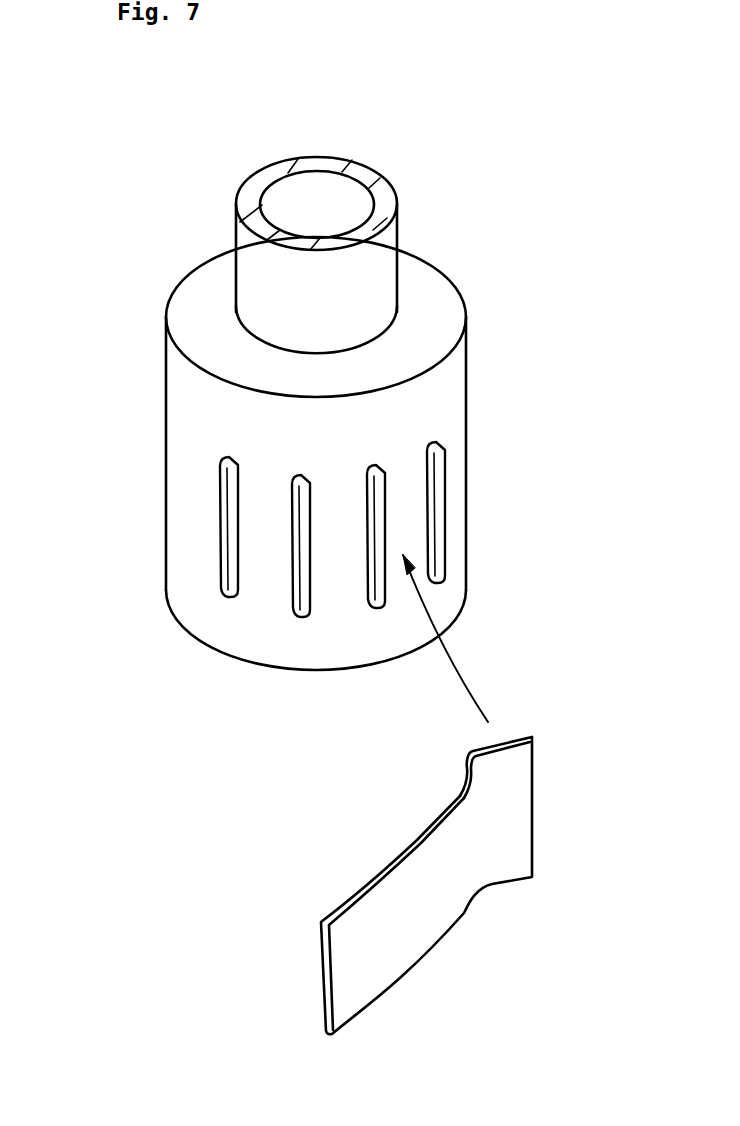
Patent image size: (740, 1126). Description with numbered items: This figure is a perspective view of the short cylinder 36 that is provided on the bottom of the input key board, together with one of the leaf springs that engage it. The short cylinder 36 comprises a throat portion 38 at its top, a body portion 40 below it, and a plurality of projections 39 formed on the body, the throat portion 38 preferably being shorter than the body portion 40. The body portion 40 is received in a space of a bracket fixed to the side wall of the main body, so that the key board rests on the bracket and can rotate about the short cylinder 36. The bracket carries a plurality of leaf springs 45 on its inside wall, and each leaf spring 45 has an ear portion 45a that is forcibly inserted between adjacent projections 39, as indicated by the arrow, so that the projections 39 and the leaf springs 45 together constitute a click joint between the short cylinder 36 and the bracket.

The short cylinder 36 is at (252, 413).
The throat portion 38 is at (250, 237).
The projections 39 is at (301, 473).
The body portion 40 is at (178, 380).
The leaf spring 45 is at (475, 794).
The ear portion 45a is at (503, 772).